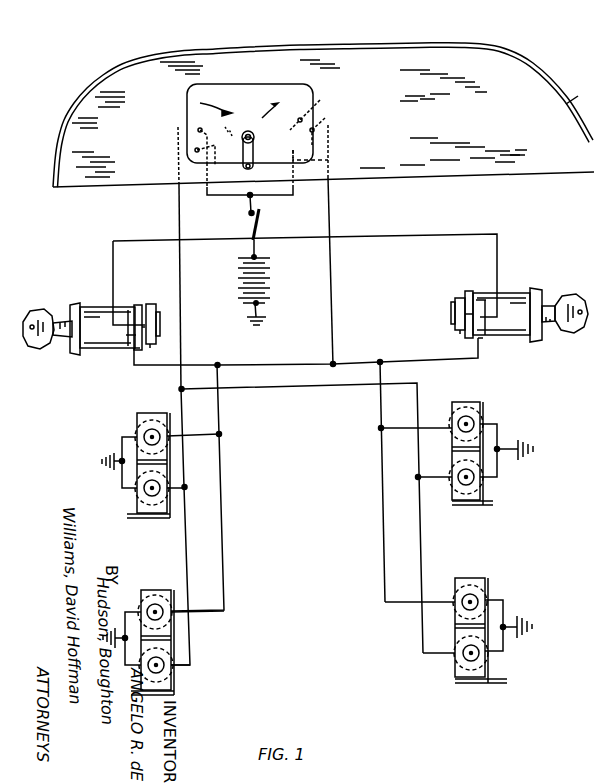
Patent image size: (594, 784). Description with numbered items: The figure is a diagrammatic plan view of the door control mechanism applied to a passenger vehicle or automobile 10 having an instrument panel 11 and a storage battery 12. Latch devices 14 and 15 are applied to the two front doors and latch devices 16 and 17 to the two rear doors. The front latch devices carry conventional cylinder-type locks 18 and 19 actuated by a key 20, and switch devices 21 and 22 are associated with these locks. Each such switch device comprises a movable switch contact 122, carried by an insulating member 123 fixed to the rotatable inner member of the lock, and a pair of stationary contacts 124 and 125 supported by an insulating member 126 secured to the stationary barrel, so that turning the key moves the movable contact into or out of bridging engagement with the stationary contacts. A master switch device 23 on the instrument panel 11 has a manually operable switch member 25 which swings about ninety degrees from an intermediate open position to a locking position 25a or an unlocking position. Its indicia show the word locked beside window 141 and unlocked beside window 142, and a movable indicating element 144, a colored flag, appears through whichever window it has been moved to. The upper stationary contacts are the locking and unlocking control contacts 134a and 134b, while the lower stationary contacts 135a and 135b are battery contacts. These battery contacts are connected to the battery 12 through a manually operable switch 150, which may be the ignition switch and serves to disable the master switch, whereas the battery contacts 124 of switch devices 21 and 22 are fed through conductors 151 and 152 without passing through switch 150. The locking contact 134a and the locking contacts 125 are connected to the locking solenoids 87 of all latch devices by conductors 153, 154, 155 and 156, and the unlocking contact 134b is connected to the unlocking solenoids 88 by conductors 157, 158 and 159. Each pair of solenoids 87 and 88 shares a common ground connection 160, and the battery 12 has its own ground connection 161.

The passenger vehicle or automobile 10 is at (552, 70).
The instrument panel 11 is at (572, 102).
The storage battery 12 is at (270, 268).
The latch device 14 is at (153, 513).
The latch device 15 is at (477, 505).
The latch device 16 is at (169, 695).
The latch device 17 is at (492, 686).
The cylinder-type lock 18 is at (85, 353).
The cylinder-type lock 19 is at (528, 340).
The key 20 is at (38, 310).
The switch device 21 is at (146, 305).
The switch device 22 is at (458, 293).
The master switch device 23 is at (312, 92).
The manually operable switch member 25 is at (243, 169).
The locking position 25a is at (328, 161).
The locking solenoid 87 is at (134, 428).
The unlocking solenoid 88 is at (134, 492).
The movable switch contact 122 is at (157, 315).
The insulating member 123 is at (150, 348).
The stationary contact 124 is at (138, 323).
The stationary contact 125 is at (134, 350).
The insulating member 126 is at (132, 338).
The locking control contact 134a is at (320, 100).
The unlocking control contact 134b is at (200, 130).
The battery contact 135a is at (325, 118).
The battery contact 135b is at (197, 150).
The locking station or window 141 is at (200, 103).
The unlocking station or window 142 is at (260, 114).
The movable indicating element 144 is at (218, 131).
The manually operable switch 150 is at (262, 215).
The conductor 151 is at (160, 240).
The conductor 152 is at (412, 234).
The conductor 153 is at (332, 272).
The conductor 154 is at (333, 362).
The conductor 155 is at (380, 440).
The conductor 156 is at (221, 440).
The conductor 157 is at (179, 205).
The conductor 158 is at (187, 535).
The conductor 159 is at (417, 490).
The common ground connection 160 is at (104, 462).
The ground connection 161 is at (264, 314).